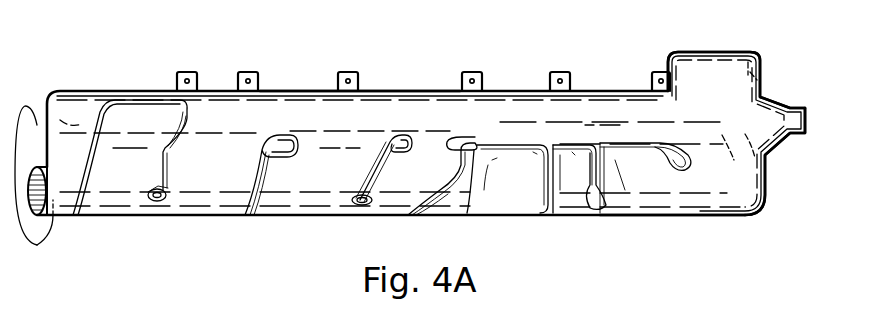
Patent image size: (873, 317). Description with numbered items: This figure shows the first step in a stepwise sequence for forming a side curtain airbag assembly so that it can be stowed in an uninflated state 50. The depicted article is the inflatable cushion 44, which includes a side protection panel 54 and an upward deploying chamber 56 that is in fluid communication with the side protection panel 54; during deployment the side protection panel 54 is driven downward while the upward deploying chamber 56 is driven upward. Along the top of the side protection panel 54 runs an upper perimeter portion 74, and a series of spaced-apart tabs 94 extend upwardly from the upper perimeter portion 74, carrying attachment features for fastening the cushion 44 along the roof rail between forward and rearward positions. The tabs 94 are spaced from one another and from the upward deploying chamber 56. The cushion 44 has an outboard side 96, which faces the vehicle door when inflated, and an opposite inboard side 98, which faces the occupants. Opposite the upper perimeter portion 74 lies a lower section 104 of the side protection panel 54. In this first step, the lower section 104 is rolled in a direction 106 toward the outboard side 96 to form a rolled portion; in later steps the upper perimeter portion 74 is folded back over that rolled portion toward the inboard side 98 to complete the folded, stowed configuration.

The inflatable cushion 44 is at (540, 50).
The uninflated state 50 is at (718, 135).
The side protection panel 54 is at (338, 179).
The upward deploying chamber 56 is at (707, 72).
The upper perimeter portion 74 is at (382, 94).
The tabs 94 is at (238, 74).
The outboard side 96 is at (37, 148).
The inboard side 98 is at (520, 179).
The lower section 104 is at (730, 200).
The rolling direction 106 is at (37, 245).